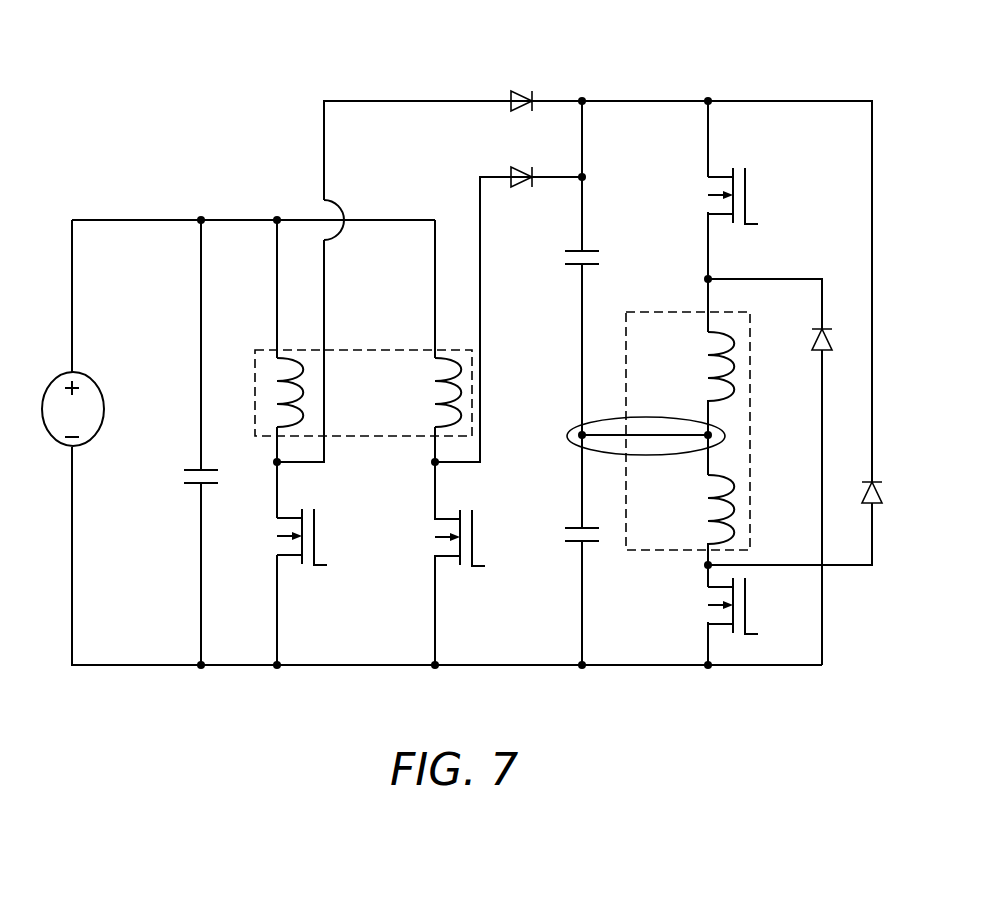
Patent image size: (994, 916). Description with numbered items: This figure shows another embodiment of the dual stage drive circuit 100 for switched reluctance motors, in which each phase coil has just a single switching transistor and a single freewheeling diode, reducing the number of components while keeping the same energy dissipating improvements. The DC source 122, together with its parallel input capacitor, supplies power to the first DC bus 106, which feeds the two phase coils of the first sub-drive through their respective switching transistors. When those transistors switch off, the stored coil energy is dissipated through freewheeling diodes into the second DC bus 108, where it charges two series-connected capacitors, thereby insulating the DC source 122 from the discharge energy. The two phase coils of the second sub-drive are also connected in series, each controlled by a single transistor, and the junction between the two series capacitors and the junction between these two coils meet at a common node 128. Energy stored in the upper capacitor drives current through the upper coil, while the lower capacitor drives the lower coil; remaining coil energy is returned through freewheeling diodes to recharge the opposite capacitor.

The dual stage drive circuit 100 is at (92, 102).
The first DC bus 106 is at (149, 219).
The second DC bus 108 is at (651, 100).
The DC source 122 is at (90, 378).
The common node 128 is at (601, 452).